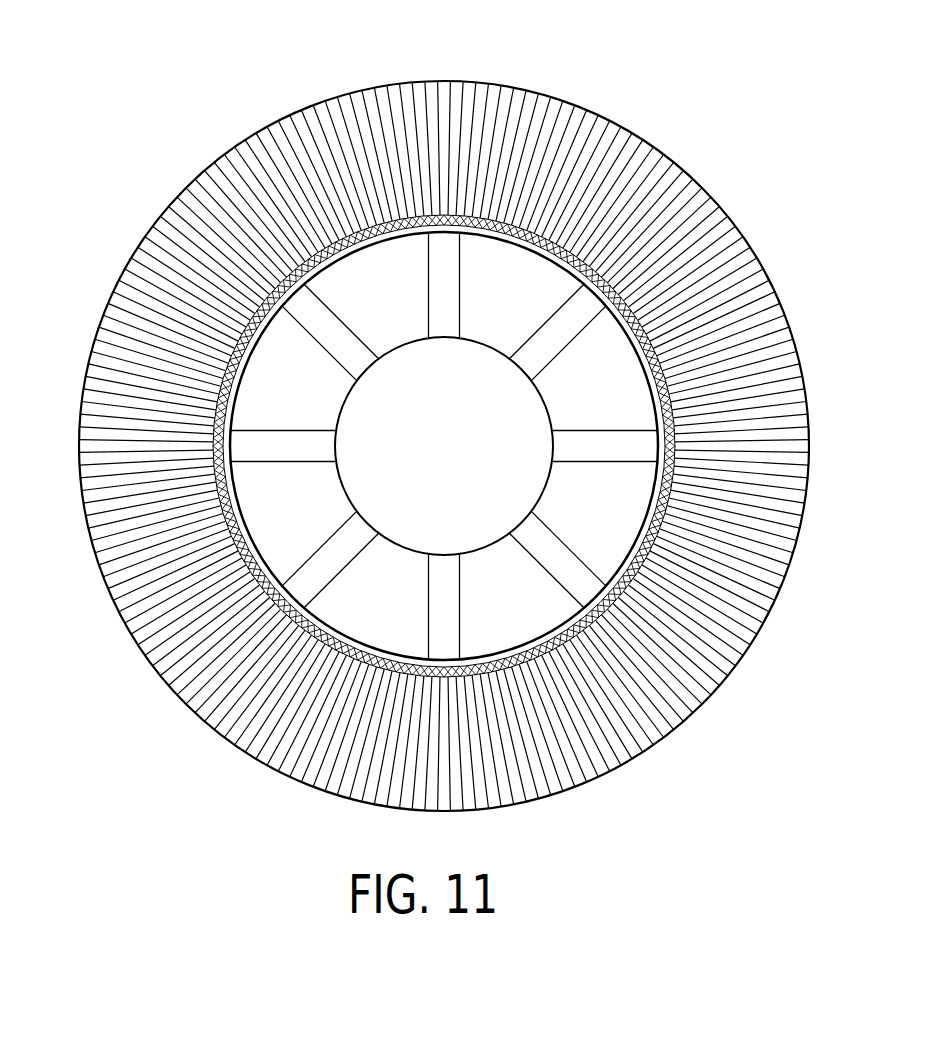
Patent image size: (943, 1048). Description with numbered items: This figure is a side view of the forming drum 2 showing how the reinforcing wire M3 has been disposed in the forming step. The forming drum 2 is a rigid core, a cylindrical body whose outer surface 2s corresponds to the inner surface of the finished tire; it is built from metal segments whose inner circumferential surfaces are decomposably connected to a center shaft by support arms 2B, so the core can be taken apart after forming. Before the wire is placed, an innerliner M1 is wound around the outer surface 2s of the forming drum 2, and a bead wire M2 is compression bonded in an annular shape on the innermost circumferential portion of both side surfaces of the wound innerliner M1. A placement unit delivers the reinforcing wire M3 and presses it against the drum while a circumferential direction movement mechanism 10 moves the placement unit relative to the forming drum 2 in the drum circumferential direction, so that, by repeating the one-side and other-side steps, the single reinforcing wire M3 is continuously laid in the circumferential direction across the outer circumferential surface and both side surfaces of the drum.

The forming drum 2 is at (547, 262).
The support arm 2B is at (438, 578).
The outer surface 2s is at (258, 130).
The circumferential direction movement mechanism 10 is at (360, 417).
The innerliner M1 is at (197, 188).
The bead wire M2 is at (353, 247).
The reinforcing wire M3 is at (433, 434).